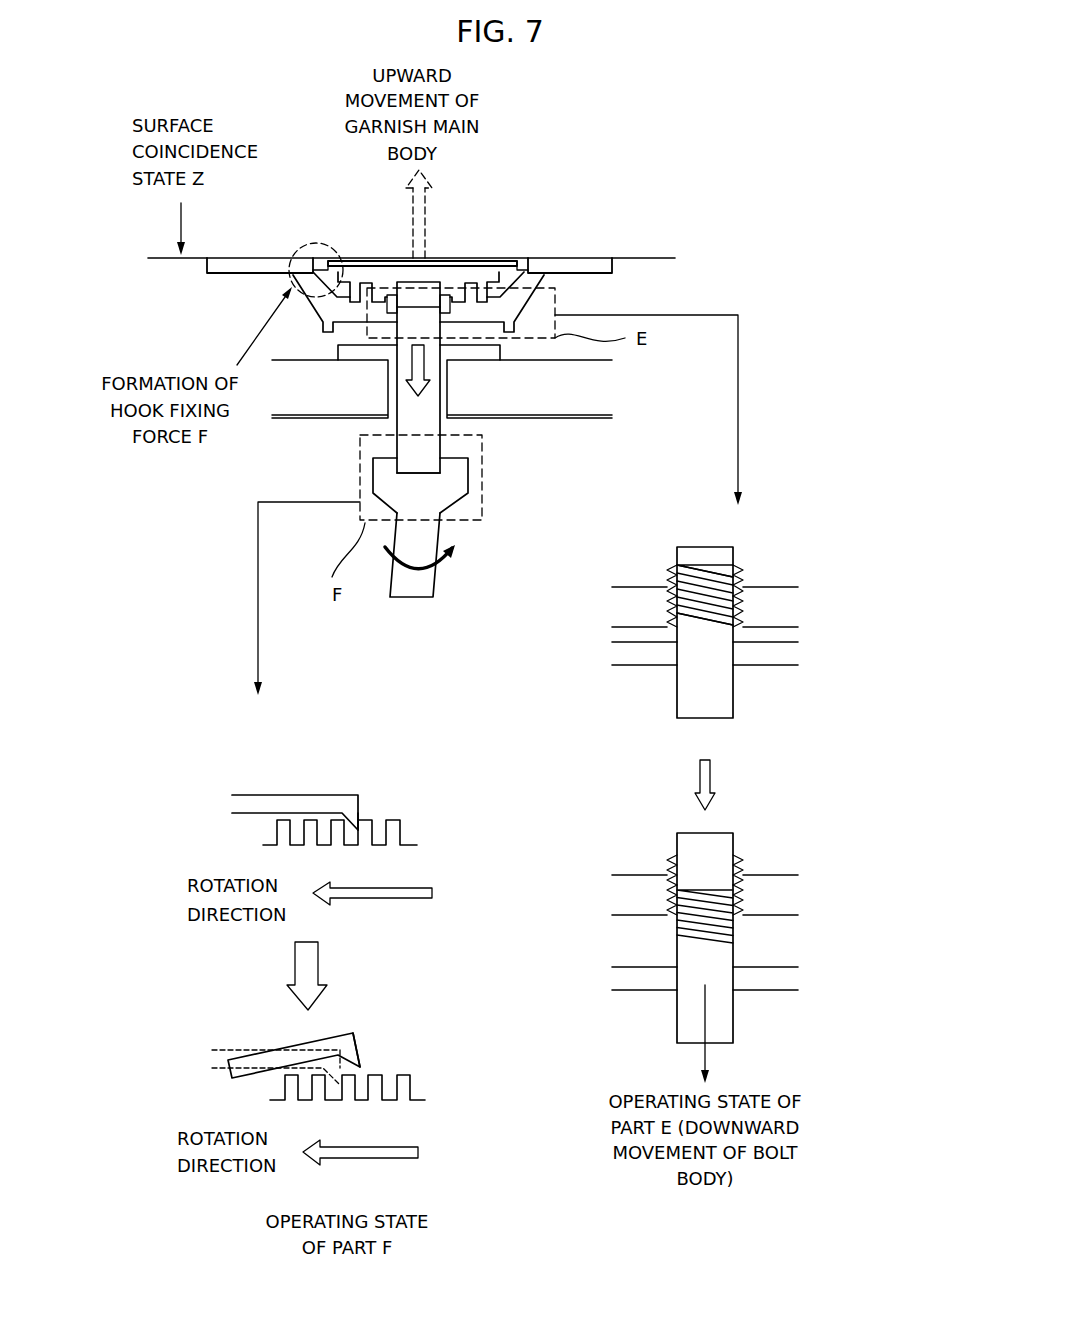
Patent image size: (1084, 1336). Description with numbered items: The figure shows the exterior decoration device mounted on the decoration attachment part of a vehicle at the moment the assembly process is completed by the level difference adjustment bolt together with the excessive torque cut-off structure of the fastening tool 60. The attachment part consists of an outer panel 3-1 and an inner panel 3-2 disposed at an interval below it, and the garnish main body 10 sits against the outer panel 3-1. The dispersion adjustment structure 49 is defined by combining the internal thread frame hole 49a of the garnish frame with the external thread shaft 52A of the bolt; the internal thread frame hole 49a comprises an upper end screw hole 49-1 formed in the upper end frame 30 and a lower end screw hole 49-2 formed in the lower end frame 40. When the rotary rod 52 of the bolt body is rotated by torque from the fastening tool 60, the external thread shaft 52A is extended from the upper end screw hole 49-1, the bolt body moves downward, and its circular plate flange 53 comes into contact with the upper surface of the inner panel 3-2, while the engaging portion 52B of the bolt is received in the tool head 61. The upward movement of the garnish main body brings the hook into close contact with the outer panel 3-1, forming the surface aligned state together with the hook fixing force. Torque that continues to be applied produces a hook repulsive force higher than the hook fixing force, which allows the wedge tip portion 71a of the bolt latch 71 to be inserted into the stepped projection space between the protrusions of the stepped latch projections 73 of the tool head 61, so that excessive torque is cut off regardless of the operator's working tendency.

The garnish main body 10 is at (376, 258).
The upper end frame 30 is at (468, 258).
The lower end frame 40 is at (527, 258).
The outer panel 3-1 is at (612, 268).
The inner panel 3-2 is at (320, 398).
The circular plate flange 53 is at (478, 353).
The external thread shaft 52A is at (428, 315).
The hook engaging portion 52B is at (435, 463).
The tool head 61 is at (390, 487).
The fastening tool 60 is at (417, 590).
The dispersion adjustment structure 49 is at (790, 725).
The internal thread frame hole 49a is at (675, 565).
The upper end screw hole 49-1 is at (745, 605).
The lower end screw hole 49-2 is at (745, 560).
The rotary rod 52 is at (688, 690).
The bolt latch 71 is at (252, 795).
The wedge tip portion 71a is at (362, 812).
The stepped latch projections 73 is at (405, 826).